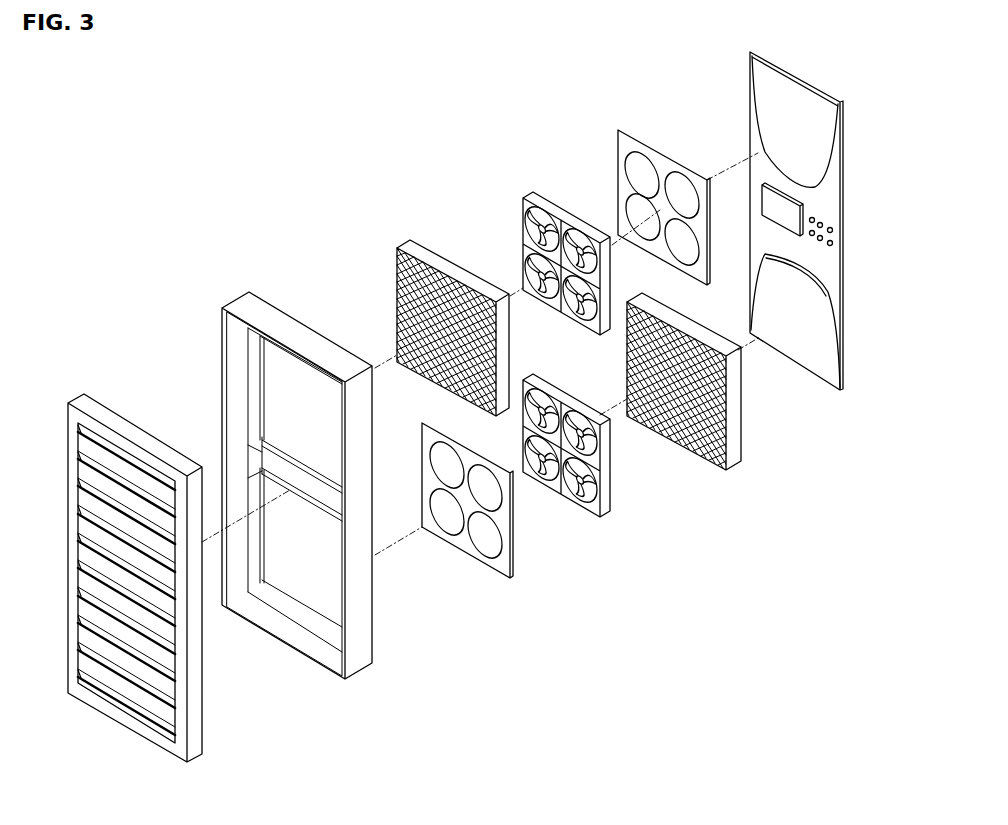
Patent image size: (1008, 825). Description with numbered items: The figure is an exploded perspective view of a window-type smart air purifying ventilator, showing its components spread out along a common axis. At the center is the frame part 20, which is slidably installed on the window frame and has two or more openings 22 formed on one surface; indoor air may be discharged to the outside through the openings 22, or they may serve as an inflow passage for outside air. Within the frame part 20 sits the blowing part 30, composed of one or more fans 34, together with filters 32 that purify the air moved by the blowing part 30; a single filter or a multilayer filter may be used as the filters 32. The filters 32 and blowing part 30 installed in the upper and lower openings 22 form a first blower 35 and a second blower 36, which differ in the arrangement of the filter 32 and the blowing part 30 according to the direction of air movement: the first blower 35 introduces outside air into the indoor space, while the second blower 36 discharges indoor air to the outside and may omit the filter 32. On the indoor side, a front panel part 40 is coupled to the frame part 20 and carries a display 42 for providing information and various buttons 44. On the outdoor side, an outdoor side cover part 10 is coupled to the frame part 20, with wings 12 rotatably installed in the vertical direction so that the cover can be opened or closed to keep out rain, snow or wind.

The outdoor side cover part 10 is at (143, 578).
The wings 12 is at (79, 505).
The frame part 20 is at (529, 367).
The openings 22 is at (305, 412).
The blowing part 30 is at (581, 360).
The filters 32 is at (397, 252).
The fans 34 is at (523, 206).
The first blower 35 is at (570, 518).
The second blower 36 is at (597, 123).
The front panel part 40 is at (825, 221).
The display 42 is at (803, 207).
The buttons 44 is at (840, 237).